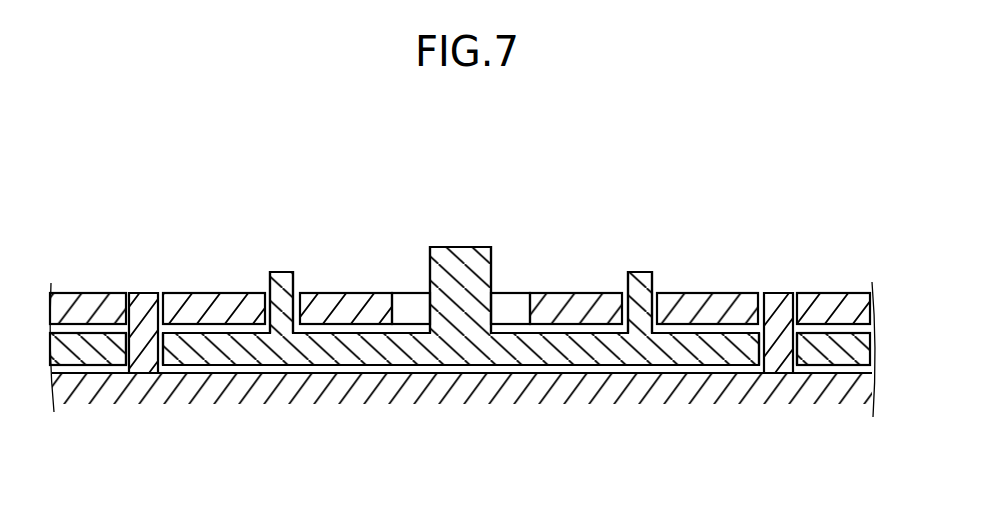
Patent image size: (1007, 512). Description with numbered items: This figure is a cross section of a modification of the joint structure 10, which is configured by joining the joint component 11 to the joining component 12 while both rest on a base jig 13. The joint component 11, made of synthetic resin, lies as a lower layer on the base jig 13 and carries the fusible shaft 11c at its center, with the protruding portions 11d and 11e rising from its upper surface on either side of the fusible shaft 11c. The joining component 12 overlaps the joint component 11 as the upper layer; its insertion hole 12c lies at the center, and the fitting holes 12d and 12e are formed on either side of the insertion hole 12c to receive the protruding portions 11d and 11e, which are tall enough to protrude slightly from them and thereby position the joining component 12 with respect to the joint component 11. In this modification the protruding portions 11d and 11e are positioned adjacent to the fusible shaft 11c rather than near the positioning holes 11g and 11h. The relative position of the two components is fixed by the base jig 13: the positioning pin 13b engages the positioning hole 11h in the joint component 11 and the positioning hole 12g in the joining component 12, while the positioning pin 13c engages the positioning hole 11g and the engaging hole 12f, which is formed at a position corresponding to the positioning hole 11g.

The joint structure 10 is at (494, 183).
The joint component 11 is at (545, 366).
The fusible shaft 11c is at (462, 247).
The protruding portion 11d is at (287, 272).
The protruding portion 11e is at (641, 271).
The positioning hole 11g is at (790, 353).
The positioning hole 11h is at (156, 350).
The joining component 12 is at (585, 292).
The insertion hole 12c is at (523, 308).
The fitting hole 12d is at (265, 293).
The fitting hole 12e is at (657, 297).
The engaging hole 12f is at (795, 303).
The positioning hole 12g is at (126, 293).
The base jig 13 is at (455, 412).
The positioning pin 13b is at (137, 355).
The positioning pin 13c is at (773, 357).